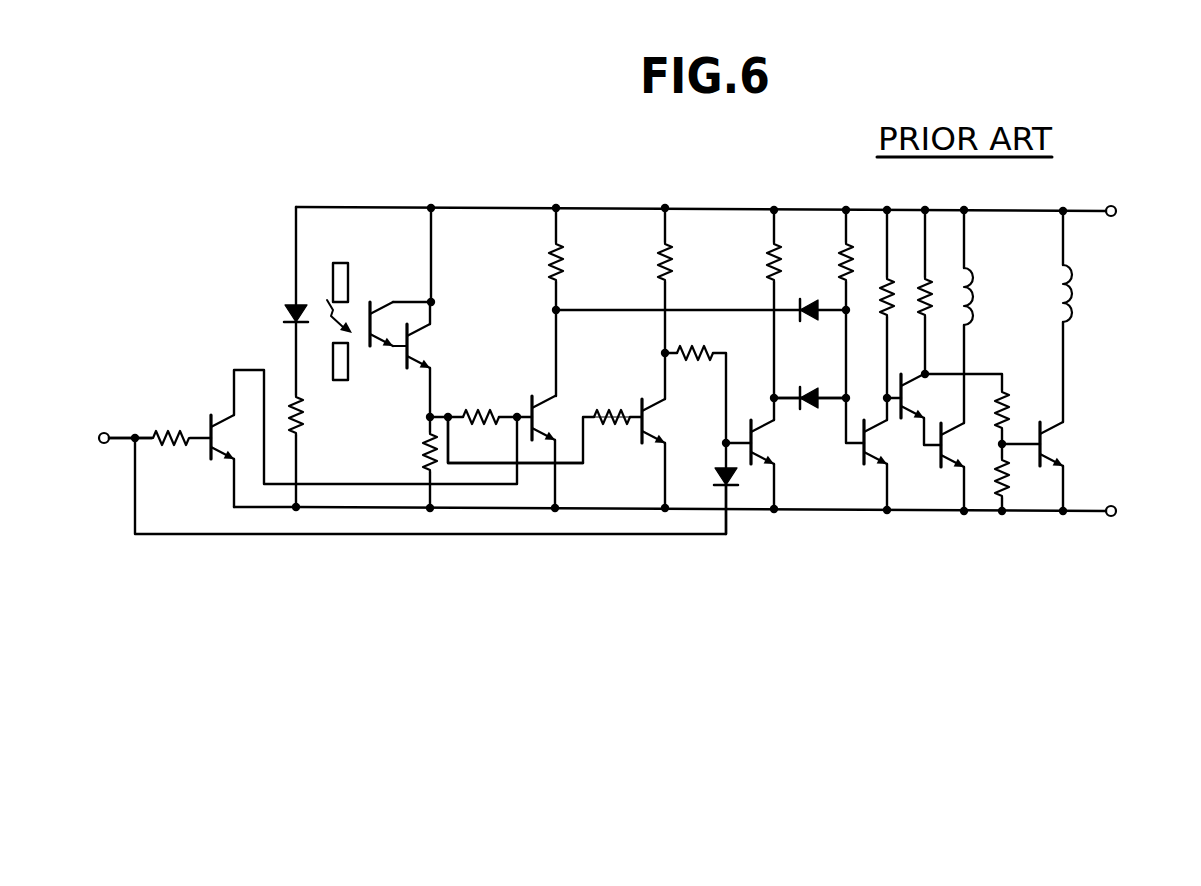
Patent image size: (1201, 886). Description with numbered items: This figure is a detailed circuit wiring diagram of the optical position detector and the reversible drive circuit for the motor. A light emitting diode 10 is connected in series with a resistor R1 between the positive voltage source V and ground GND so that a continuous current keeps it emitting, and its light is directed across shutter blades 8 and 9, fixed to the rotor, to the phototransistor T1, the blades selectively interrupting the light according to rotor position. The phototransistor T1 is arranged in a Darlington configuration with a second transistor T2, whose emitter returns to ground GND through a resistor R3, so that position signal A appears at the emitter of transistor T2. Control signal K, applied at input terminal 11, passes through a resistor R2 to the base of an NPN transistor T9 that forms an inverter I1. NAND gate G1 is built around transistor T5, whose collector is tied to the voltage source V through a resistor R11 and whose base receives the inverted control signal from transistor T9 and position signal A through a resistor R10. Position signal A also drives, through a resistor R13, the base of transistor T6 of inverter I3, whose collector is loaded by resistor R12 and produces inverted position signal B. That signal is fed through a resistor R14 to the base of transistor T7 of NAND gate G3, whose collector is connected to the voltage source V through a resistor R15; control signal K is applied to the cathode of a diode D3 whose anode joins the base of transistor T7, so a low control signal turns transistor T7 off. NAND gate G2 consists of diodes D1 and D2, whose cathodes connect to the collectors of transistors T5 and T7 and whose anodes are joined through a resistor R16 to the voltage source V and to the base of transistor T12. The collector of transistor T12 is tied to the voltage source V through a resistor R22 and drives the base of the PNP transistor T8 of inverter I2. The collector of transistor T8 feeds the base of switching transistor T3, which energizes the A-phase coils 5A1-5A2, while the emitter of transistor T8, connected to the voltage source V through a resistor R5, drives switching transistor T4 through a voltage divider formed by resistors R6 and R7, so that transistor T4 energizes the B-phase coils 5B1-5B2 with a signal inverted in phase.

The input terminal 11 is at (100, 433).
The control signal K is at (126, 441).
The inverter I1 is at (182, 420).
The resistor R2 is at (170, 455).
The NPN transistor T9 is at (222, 420).
The resistor R1 is at (315, 419).
The light emitting diode 10 is at (285, 315).
The shutter blade 8 is at (338, 272).
The shutter blade 9 is at (344, 382).
The phototransistor T1 is at (378, 314).
The second transistor T2 is at (414, 349).
The resistor R10 is at (487, 402).
The NAND gate G1 is at (492, 459).
The resistor R3 is at (421, 449).
The NPN transistor T5 is at (546, 418).
The inverter I3 is at (647, 398).
The resistor R13 is at (614, 427).
The resistor R11 is at (555, 257).
The resistor R12 is at (662, 257).
The resistor R14 is at (700, 343).
The NPN transistor T6 is at (649, 421).
The diode D3 is at (715, 477).
The NAND gate G3 is at (766, 416).
The NPN transistor T7 is at (760, 450).
The resistor R15 is at (768, 256).
The resistor R16 is at (840, 255).
The diode D1 is at (809, 306).
The diode D2 is at (807, 410).
The NAND gate G2 is at (829, 379).
The resistor R22 is at (885, 284).
The resistor R5 is at (924, 284).
The NPN transistor T12 is at (872, 466).
The PNP transistor T8 is at (906, 418).
The inverter I2 is at (950, 417).
The switching transistor T3 is at (932, 464).
The A-phase coils 5A1-5A2 is at (974, 292).
The B-phase coils 5B1-5B2 is at (1075, 292).
The resistor R6 is at (1024, 410).
The resistor R7 is at (1024, 481).
The switching transistor T4 is at (1050, 446).
The voltage source V is at (1135, 212).
The ground GND is at (1146, 513).